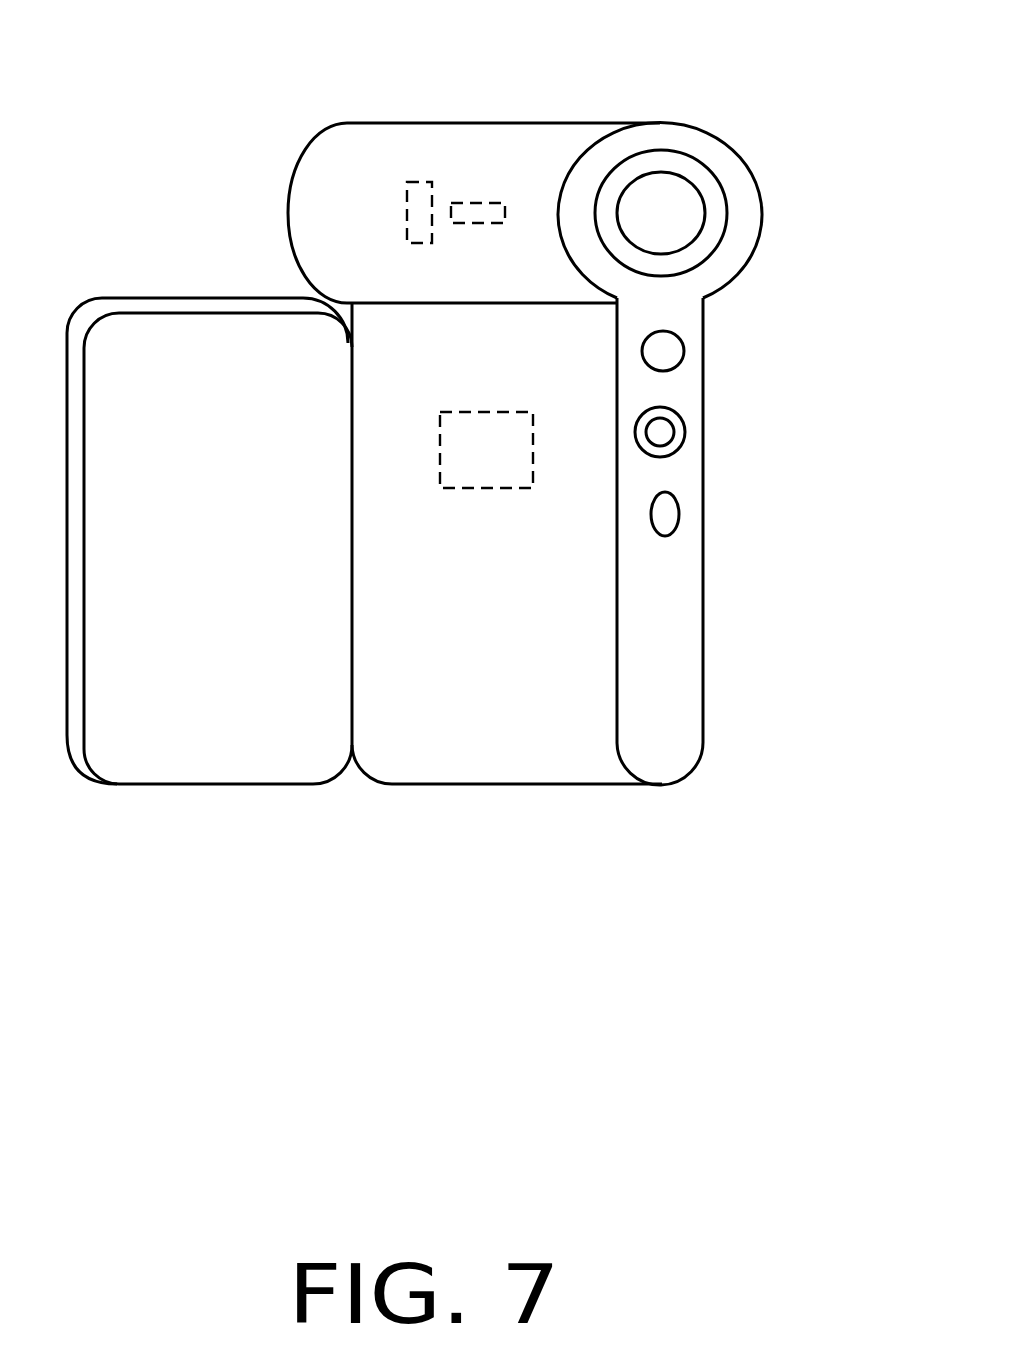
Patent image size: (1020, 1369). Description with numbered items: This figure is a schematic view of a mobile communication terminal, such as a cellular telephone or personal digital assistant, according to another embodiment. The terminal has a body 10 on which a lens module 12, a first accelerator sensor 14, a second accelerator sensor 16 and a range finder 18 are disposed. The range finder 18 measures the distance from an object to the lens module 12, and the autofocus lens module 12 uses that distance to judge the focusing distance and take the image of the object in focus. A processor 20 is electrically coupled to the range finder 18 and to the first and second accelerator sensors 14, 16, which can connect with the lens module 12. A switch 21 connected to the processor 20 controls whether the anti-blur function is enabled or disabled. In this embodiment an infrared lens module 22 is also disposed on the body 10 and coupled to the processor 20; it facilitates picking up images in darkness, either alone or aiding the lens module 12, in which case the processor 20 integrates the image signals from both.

The body 10 is at (550, 660).
The lens module 12 is at (680, 213).
The first accelerator sensor 14 is at (423, 200).
The second accelerator sensor 16 is at (480, 210).
The range finder 18 is at (665, 352).
The processor 20 is at (472, 455).
The switch 21 is at (665, 514).
The infrared lens module 22 is at (660, 432).